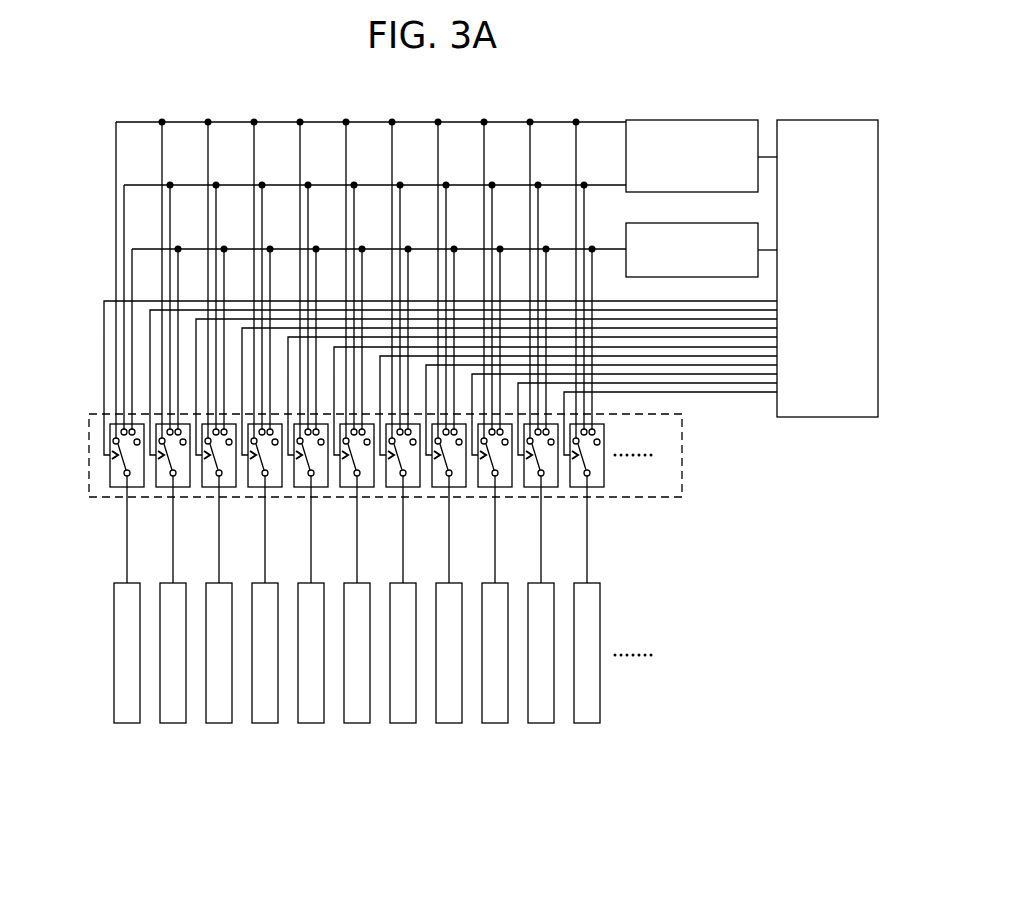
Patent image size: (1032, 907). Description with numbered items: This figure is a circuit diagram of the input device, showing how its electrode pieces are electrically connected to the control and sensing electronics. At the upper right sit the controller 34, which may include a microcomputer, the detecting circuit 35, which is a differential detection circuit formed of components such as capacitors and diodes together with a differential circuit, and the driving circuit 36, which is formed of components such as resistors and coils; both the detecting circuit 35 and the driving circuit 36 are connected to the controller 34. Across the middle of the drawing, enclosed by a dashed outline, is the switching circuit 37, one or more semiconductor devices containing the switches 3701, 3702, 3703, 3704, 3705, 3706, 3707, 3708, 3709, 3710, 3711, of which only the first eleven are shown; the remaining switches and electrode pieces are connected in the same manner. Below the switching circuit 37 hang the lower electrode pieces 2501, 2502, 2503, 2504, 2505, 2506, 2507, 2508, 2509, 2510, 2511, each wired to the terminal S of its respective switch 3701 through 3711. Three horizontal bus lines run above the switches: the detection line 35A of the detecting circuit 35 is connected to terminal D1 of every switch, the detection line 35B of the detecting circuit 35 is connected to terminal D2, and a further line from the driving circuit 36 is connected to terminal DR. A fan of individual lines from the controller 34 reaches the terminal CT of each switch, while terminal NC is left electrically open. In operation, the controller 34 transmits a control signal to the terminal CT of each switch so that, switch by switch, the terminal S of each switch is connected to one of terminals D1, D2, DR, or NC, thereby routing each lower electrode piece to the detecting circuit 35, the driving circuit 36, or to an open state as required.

The controller 34 is at (832, 118).
The detecting circuit 35 is at (710, 118).
The detection line 35A is at (612, 120).
The detection line 35B is at (608, 183).
The driving circuit 36 is at (625, 242).
The switching circuit 37 is at (93, 434).
The switch 3701 is at (107, 477).
The switch 3702 is at (163, 478).
The switch 3703 is at (208, 480).
The switch 3704 is at (257, 480).
The switch 3705 is at (300, 480).
The switch 3706 is at (367, 482).
The switch 3707 is at (413, 482).
The switch 3708 is at (459, 482).
The switch 3709 is at (505, 482).
The switch 3710 is at (551, 482).
The switch 3711 is at (597, 467).
The lower electrode piece 2501 is at (125, 713).
The lower electrode piece 2502 is at (173, 722).
The lower electrode piece 2503 is at (217, 713).
The lower electrode piece 2504 is at (265, 722).
The lower electrode piece 2505 is at (309, 713).
The lower electrode piece 2506 is at (357, 722).
The lower electrode piece 2507 is at (401, 713).
The lower electrode piece 2508 is at (449, 722).
The lower electrode piece 2509 is at (493, 713).
The lower electrode piece 2510 is at (541, 722).
The lower electrode piece 2511 is at (585, 713).